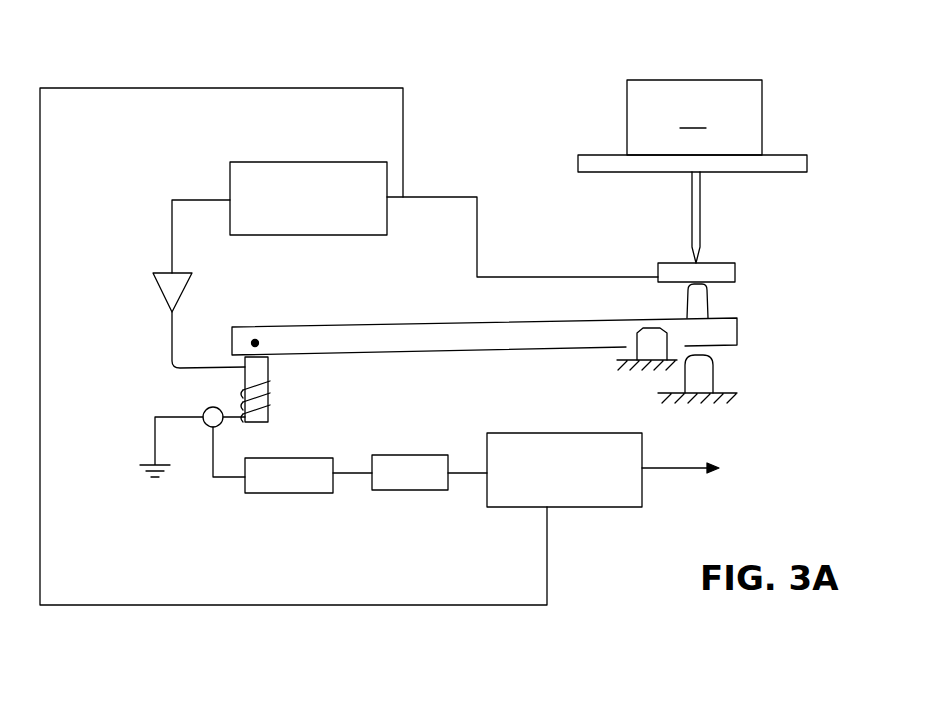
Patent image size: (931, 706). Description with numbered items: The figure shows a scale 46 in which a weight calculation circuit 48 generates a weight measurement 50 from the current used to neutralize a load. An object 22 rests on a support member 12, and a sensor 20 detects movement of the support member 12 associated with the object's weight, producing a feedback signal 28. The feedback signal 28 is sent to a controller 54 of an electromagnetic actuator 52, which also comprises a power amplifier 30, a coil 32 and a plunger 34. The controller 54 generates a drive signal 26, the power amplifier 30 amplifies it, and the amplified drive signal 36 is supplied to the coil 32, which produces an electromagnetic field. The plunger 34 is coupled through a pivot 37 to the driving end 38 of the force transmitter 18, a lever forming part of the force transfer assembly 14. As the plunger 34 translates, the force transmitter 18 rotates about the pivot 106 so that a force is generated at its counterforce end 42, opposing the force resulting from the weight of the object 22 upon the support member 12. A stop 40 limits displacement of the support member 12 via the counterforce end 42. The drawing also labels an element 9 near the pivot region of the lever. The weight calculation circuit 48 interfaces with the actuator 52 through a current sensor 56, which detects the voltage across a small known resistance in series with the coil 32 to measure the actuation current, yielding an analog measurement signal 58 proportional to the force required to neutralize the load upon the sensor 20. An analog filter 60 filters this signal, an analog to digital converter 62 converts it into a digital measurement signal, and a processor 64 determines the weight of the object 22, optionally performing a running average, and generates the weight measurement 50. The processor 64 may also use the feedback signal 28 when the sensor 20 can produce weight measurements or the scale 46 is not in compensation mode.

The scale 46 is at (446, 40).
The electromagnetic actuator 52 is at (430, 167).
The controller 54 is at (270, 162).
The drive signal 26 is at (172, 239).
The power amplifier 30 is at (153, 300).
The amplified drive signal 36 is at (172, 345).
The coil 32 is at (193, 368).
The feedback signal 28 is at (478, 250).
The object 22 is at (694, 117).
The support member 12 is at (807, 162).
The sensor 20 is at (737, 270).
The counterforce end 42 is at (636, 305).
The force transmitter 18 is at (388, 355).
The driving end 38 is at (273, 300).
The pivot 37 is at (257, 344).
The plunger 34 is at (257, 423).
The current sensor 56 is at (205, 430).
The analog measurement signal 58 is at (235, 478).
The weight calculation circuit 48 is at (287, 553).
The analog filter 60 is at (300, 493).
The analog to digital converter 62 is at (428, 490).
The processor 64 is at (565, 507).
The weight measurement 50 is at (660, 478).
The pivot 9 is at (652, 344).
The pivot 106 is at (650, 364).
The stop 40 is at (685, 366).
The force transfer assembly 14 is at (762, 370).